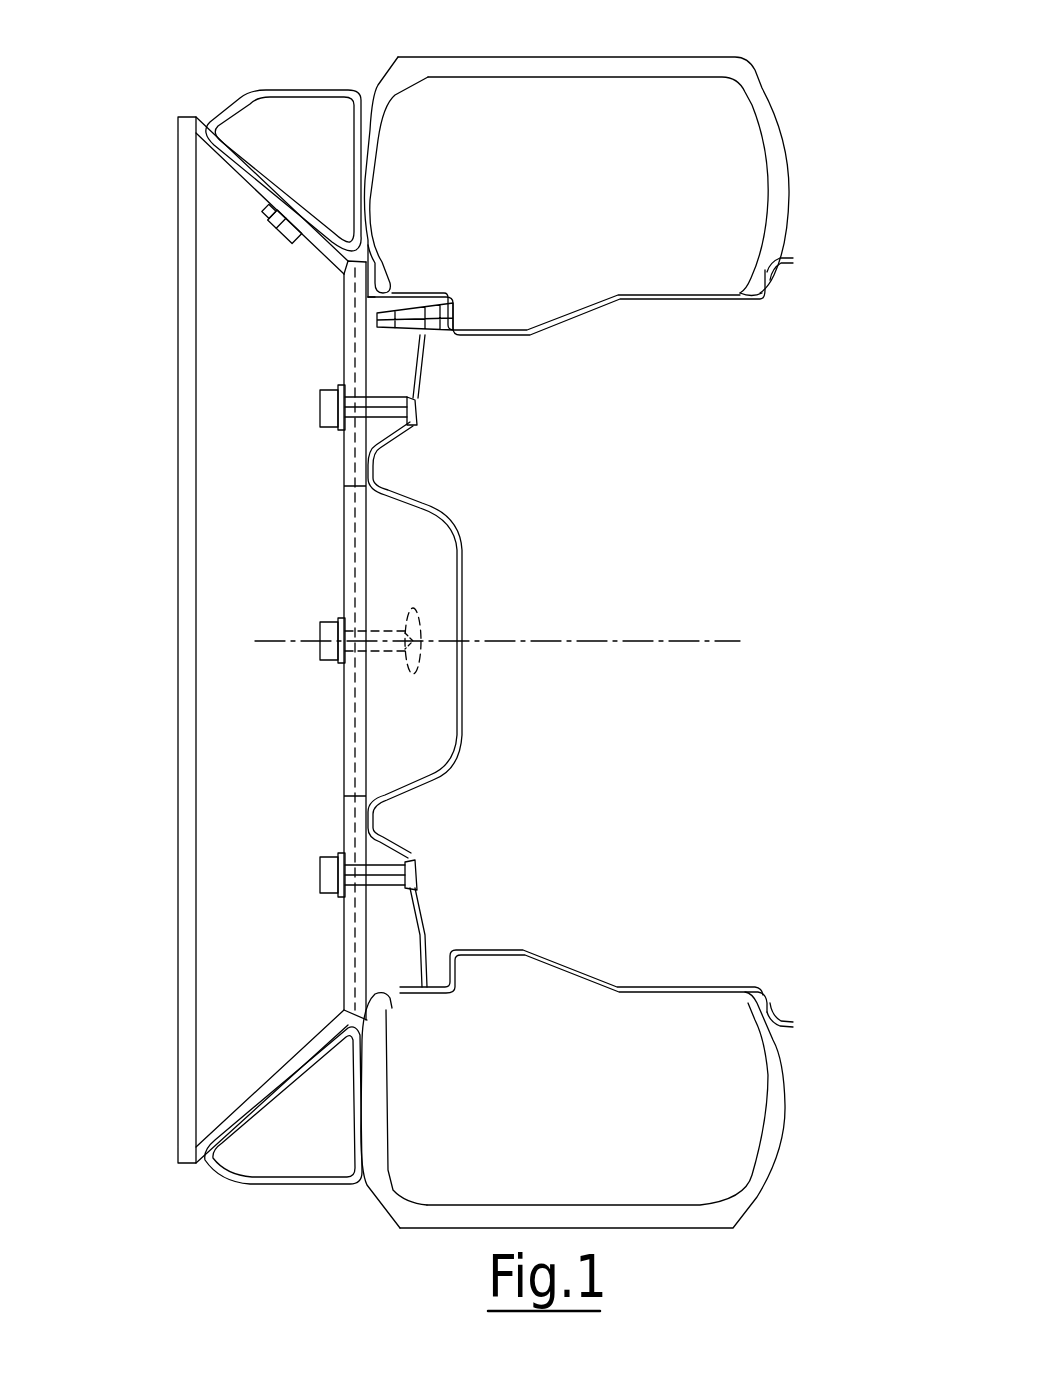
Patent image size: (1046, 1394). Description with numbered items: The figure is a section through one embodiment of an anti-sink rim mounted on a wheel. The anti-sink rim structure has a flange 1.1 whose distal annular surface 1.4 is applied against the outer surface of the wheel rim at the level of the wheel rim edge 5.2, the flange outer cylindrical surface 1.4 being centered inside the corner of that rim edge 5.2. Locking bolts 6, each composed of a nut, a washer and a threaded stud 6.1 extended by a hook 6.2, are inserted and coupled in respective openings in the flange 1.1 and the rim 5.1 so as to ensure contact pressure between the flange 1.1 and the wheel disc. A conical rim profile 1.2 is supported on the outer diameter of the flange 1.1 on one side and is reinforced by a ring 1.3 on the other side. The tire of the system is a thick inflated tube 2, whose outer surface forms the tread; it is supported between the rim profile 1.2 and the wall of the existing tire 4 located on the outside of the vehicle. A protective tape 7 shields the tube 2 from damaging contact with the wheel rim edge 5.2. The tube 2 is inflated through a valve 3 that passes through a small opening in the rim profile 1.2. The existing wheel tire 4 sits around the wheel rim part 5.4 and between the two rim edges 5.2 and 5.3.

The flange 1.1 is at (352, 810).
The conical rim profile 1.2 is at (255, 182).
The ring 1.3 is at (187, 121).
The distal annular surface of the flange 1.4 is at (352, 263).
The thick inflated tube 2 is at (262, 98).
The valve 3 is at (278, 229).
The existing tire 4 is at (560, 72).
The rim 5.1 is at (452, 597).
The wheel rim edge 5.2 is at (367, 260).
The rim edge 5.3 is at (765, 295).
The wheel rim part 5.4 is at (508, 333).
The locking bolts 6 is at (330, 407).
The threaded stud 6.1 is at (330, 873).
The hook 6.2 is at (412, 410).
The protective tape 7 is at (350, 1030).